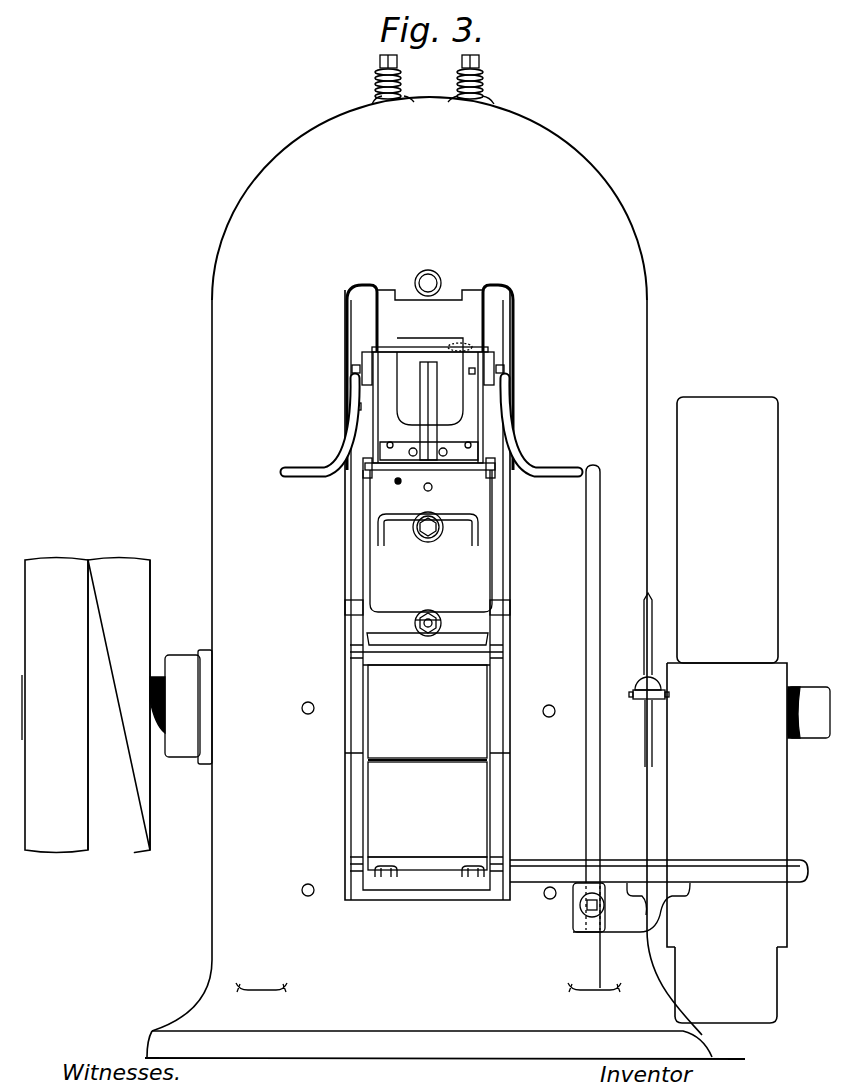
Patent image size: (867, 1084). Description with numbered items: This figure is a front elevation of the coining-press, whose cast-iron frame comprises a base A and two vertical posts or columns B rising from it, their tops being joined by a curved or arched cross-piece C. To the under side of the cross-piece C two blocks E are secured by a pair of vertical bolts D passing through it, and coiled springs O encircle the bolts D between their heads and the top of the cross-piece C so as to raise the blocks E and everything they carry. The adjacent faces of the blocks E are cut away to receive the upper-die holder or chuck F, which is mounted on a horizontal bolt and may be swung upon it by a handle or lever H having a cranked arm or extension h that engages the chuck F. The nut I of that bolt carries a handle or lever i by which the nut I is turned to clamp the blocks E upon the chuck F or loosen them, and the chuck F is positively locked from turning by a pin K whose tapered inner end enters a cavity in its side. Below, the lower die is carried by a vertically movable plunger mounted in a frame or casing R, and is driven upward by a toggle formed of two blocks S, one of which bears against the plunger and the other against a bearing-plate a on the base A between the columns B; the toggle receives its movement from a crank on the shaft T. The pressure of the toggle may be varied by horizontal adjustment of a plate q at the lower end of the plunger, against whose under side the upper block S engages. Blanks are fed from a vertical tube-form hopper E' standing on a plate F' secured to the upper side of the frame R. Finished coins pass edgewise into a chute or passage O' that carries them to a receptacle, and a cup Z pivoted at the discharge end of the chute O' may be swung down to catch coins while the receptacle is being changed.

The cross-piece C is at (429, 198).
The vertical bolt D is at (380, 61).
The coiled spring O is at (431, 84).
The vertical post or column B is at (427, 667).
The base A is at (445, 1025).
The shaft T is at (168, 697).
The chute or passage O' is at (634, 680).
The cup Z is at (660, 684).
The suspension ring N is at (428, 278).
The block E is at (430, 377).
The nut I is at (366, 352).
The cranked arm or extension h is at (470, 346).
The locking pin K is at (352, 407).
The die holder or chuck F is at (430, 405).
The hopper E' is at (432, 411).
The handle or lever i is at (315, 470).
The handle or lever H is at (553, 470).
The plate F' is at (429, 469).
The frame or casing R is at (431, 541).
The plate q is at (470, 627).
The toggle block S is at (426, 745).
The bearing-plate a is at (421, 873).